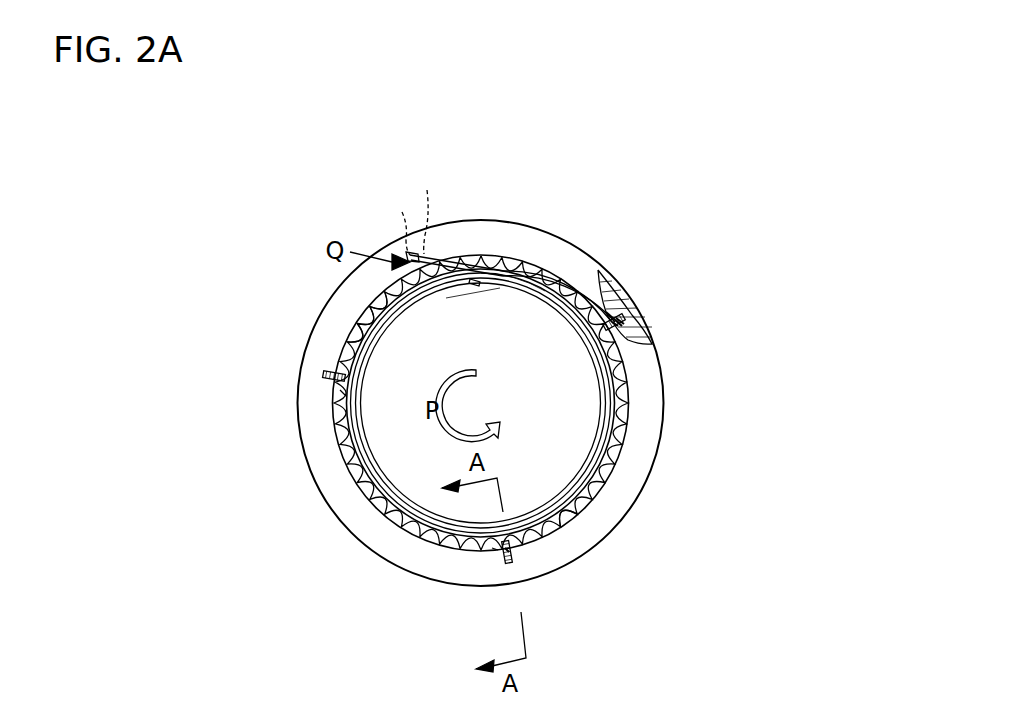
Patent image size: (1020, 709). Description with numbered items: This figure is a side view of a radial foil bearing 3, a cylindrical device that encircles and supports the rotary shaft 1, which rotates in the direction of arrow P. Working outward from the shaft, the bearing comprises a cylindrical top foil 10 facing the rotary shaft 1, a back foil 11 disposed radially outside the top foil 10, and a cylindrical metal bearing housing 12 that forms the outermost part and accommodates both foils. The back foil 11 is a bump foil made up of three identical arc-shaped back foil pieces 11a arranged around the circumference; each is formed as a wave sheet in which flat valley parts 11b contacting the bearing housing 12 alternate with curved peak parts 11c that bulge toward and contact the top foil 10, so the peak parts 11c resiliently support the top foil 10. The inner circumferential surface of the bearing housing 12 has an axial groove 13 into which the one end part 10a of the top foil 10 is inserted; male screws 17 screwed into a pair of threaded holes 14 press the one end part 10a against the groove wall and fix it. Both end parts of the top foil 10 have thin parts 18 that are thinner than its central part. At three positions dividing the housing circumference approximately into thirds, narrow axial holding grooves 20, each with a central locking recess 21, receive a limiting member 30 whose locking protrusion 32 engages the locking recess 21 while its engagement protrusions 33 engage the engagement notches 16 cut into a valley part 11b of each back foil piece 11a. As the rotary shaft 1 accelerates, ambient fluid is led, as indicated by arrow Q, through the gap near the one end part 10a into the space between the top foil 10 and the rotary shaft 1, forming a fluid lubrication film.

The rotary shaft 1 is at (396, 446).
The radial foil bearing 3 is at (584, 226).
The top foil 10 is at (622, 436).
The one end part 10a is at (428, 271).
The back foil 11 is at (628, 418).
The back foil piece 11a is at (354, 468).
The valley part 11b is at (376, 320).
The peak part 11c is at (356, 342).
The bearing housing 12 is at (652, 390).
The groove 13 is at (430, 256).
The holes 14 is at (432, 209).
The engagement notch 16 is at (345, 394).
The male screw 17 is at (390, 221).
The thin part 18 is at (414, 300).
The holding groove 20 is at (330, 374).
The locking recess 21 is at (622, 320).
The limiting member 30 is at (650, 340).
The locking protrusion 32 is at (628, 332).
The engagement protrusion 33 is at (612, 325).